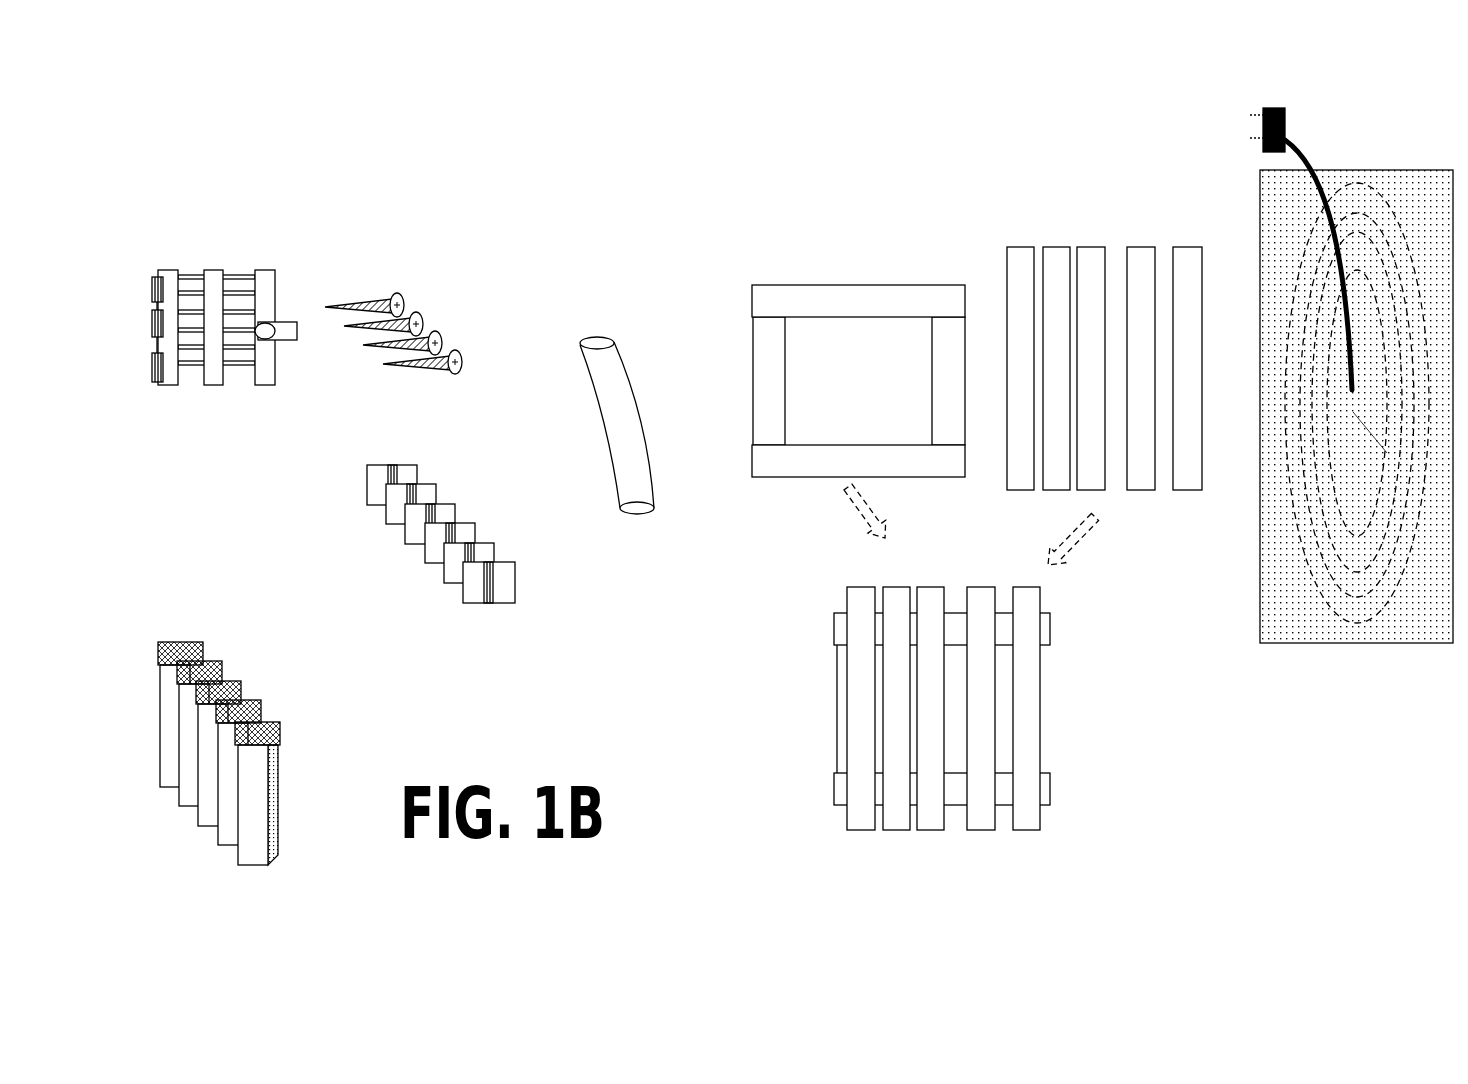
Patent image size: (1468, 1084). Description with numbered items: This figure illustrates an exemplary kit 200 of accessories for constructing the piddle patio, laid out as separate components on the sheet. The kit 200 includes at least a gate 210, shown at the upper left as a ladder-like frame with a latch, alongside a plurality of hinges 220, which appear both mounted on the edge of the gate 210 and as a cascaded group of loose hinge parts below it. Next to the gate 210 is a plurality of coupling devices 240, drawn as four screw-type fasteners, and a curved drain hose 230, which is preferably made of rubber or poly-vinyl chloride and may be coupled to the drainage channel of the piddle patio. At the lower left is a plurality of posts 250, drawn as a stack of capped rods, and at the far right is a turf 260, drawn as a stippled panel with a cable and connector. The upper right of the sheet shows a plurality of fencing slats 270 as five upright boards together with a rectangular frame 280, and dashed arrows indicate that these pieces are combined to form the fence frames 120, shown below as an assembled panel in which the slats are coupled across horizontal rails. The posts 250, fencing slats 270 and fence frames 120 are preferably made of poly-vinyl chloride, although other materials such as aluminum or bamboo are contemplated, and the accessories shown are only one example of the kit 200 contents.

The kit 200 is at (857, 61).
The gate 210 is at (248, 247).
The hinges 220 is at (148, 277).
The drain hose 230 is at (605, 315).
The coupling devices 240 is at (407, 270).
The posts 250 is at (257, 667).
The turf 260 is at (1370, 647).
The fencing slats 270 is at (1087, 228).
The frame 280 is at (842, 290).
The fence frames 120 is at (1085, 718).